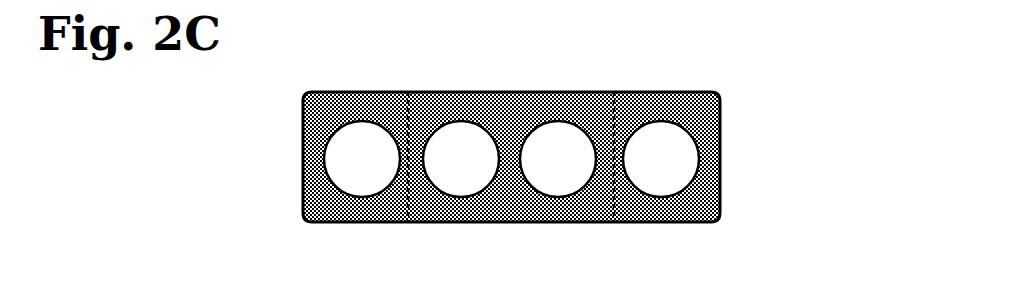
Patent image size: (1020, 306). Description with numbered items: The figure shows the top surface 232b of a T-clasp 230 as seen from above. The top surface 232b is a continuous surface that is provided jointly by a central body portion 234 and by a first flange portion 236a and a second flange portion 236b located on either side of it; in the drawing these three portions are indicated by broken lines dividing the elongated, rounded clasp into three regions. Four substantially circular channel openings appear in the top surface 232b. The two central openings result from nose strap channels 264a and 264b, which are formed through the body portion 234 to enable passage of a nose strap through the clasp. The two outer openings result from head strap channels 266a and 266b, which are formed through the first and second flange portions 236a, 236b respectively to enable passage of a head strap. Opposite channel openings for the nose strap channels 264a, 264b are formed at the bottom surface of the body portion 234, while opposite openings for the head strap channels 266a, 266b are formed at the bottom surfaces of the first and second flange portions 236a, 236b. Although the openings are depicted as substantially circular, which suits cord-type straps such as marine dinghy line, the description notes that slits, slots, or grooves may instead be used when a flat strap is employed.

The T-clasp 230 is at (546, 171).
The top surface 232b is at (332, 110).
The body portion 234 is at (497, 222).
The first flange portion 236a is at (347, 222).
The second flange portion 236b is at (673, 222).
The nose strap channel 264a is at (435, 170).
The nose strap channel 264b is at (532, 170).
The head strap channel 266a is at (336, 170).
The head strap channel 266b is at (635, 170).